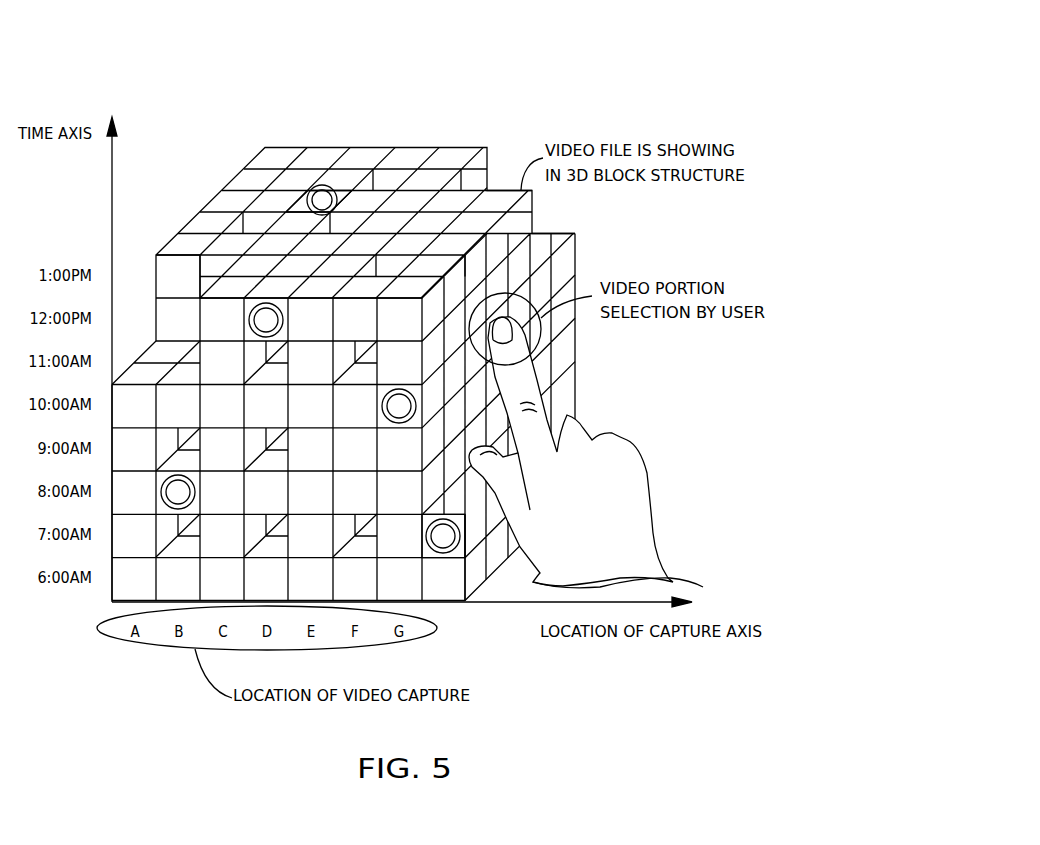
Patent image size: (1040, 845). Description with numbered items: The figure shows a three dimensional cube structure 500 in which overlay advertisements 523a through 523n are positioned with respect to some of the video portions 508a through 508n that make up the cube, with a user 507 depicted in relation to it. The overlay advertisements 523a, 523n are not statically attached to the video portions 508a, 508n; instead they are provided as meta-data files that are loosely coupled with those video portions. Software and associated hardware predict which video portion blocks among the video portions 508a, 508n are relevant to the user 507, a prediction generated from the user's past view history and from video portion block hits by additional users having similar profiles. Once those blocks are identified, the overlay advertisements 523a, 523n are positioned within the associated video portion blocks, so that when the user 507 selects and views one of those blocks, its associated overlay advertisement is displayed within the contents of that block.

The three dimensional cube structure 500 is at (123, 73).
The user 507 is at (645, 515).
The video portion 508a is at (303, 203).
The overlay advertisement 523a is at (326, 184).
The video portion 508n is at (428, 550).
The overlay advertisement 523n is at (447, 542).